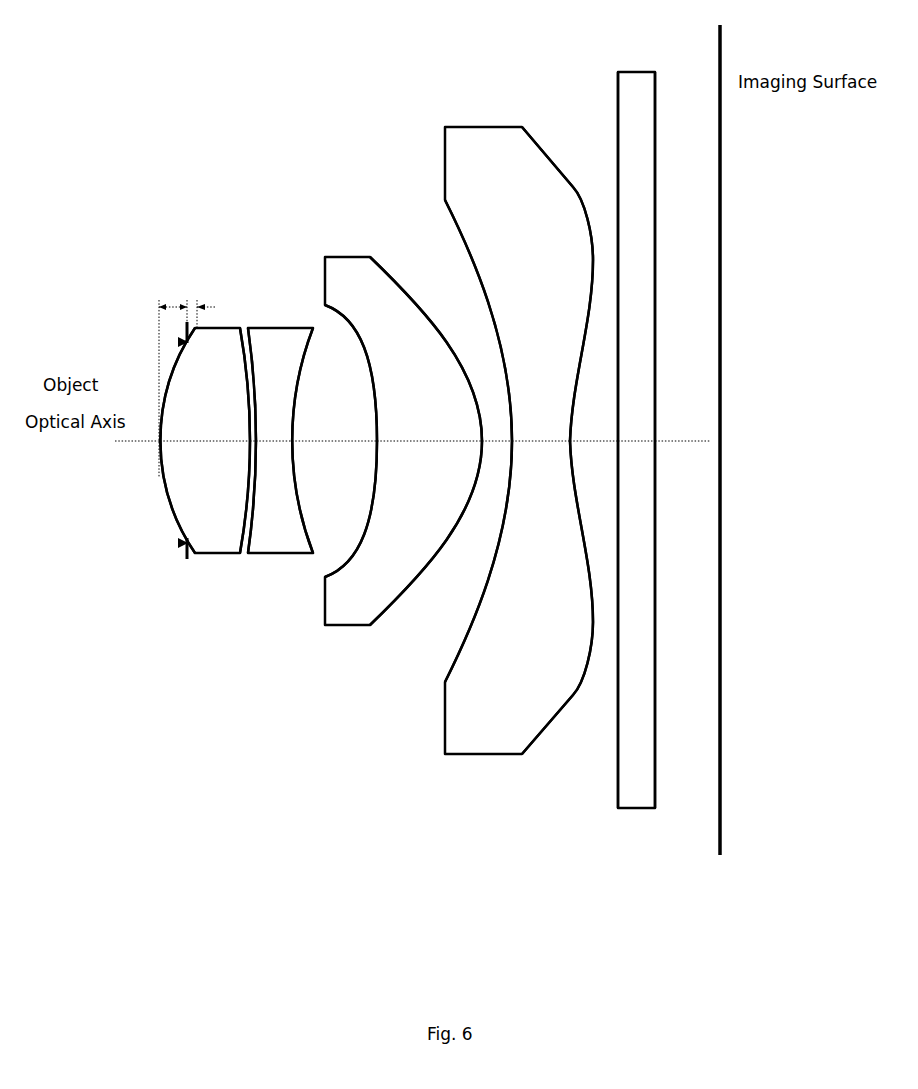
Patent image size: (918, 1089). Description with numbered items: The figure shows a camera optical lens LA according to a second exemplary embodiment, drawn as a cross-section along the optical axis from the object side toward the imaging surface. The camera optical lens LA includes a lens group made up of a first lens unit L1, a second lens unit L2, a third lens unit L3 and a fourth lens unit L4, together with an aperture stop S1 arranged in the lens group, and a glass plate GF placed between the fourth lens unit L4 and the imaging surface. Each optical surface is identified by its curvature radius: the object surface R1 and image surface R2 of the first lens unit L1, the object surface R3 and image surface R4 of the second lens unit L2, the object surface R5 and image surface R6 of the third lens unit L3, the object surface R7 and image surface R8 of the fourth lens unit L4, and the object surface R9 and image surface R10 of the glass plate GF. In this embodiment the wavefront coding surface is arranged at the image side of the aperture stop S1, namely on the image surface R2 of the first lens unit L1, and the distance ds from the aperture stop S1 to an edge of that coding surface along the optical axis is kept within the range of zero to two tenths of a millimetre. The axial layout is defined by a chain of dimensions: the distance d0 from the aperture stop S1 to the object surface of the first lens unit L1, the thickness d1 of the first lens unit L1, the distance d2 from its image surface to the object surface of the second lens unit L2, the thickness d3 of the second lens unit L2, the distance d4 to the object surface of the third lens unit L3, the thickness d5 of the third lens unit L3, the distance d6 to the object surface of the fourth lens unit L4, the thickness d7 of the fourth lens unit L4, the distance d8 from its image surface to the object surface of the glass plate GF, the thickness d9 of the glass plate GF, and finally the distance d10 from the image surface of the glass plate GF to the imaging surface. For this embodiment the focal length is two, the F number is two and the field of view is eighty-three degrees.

The first lens unit L1 is at (205, 440).
The second lens unit L2 is at (280, 440).
The third lens unit L3 is at (403, 441).
The fourth lens unit L4 is at (519, 440).
The glass plate GF is at (636, 440).
The aperture stop S1 is at (180, 338).
The camera optical lens LA is at (895, 55).
The curvature radius of an object surface of the first lens unit R1 is at (162, 473).
The curvature radius of an image surface of the first lens unit R2 is at (247, 467).
The curvature radius of an object surface of the second lens unit R3 is at (257, 467).
The curvature radius of an image surface of the second lens unit R4 is at (295, 372).
The curvature radius of an object surface of the third lens unit R5 is at (373, 468).
The curvature radius of an image surface of the third lens unit R6 is at (452, 535).
The curvature radius of an object surface of the fourth lens unit R7 is at (504, 377).
The curvature radius of an image surface of the fourth lens unit R8 is at (578, 355).
The curvature radius of an object surface of the glass plate R9 is at (618, 190).
The curvature radius of an image surface of the glass plate R10 is at (655, 177).
The distance from the aperture stop to the object surface of the first lens unit d0 is at (170, 379).
The distance from the aperture stop to an edge of the wavefront coding surface ds is at (198, 304).
The thickness of the first lens unit d1 is at (205, 430).
The distance from the image surface of the first lens unit to the object surface of d2 is at (249, 335).
The thickness of the second lens unit d3 is at (274, 430).
The distance from the image surface of the second lens unit to the object surface of d4 is at (334, 430).
The thickness of the third lens unit d5 is at (429, 430).
The distance from the image surface of the third lens unit to the object surface of d6 is at (497, 430).
The thickness of the fourth lens unit d7 is at (541, 430).
The distance from the image surface of the fourth lens unit to the object surface of d8 is at (594, 430).
The thickness of the glass plate d9 is at (636, 430).
The distance from the image surface of the glass plate to the imaging surface d10 is at (682, 430).